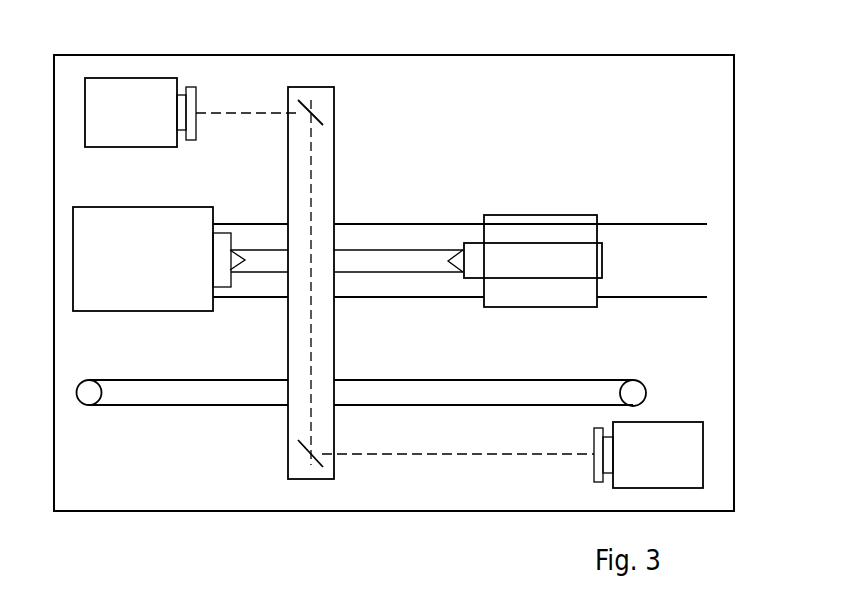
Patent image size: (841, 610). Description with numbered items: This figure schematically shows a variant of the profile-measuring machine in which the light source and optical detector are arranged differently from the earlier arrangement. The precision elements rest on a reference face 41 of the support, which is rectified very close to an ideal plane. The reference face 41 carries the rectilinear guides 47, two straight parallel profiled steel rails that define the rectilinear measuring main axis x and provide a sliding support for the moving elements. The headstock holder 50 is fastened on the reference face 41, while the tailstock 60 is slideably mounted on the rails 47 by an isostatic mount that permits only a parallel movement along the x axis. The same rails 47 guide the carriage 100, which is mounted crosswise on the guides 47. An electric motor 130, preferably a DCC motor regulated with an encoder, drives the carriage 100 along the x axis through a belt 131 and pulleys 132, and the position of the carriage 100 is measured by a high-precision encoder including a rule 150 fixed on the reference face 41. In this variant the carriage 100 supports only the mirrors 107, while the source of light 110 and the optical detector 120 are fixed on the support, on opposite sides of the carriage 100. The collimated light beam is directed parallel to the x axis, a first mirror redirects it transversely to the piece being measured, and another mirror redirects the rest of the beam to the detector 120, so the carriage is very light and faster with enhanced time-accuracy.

The reference face 41 is at (675, 121).
The rectilinear guides 47 is at (413, 223).
The headstock holder 50 is at (173, 235).
The tailstock 60 is at (508, 258).
The carriage 100 is at (325, 190).
The mirrors 107 is at (313, 117).
The source of light 110 is at (133, 125).
The optical detector 120 is at (660, 445).
The electric motor 130 is at (633, 394).
The belt 131 is at (460, 381).
The pulleys 132 is at (89, 391).
The rule 150 is at (385, 263).